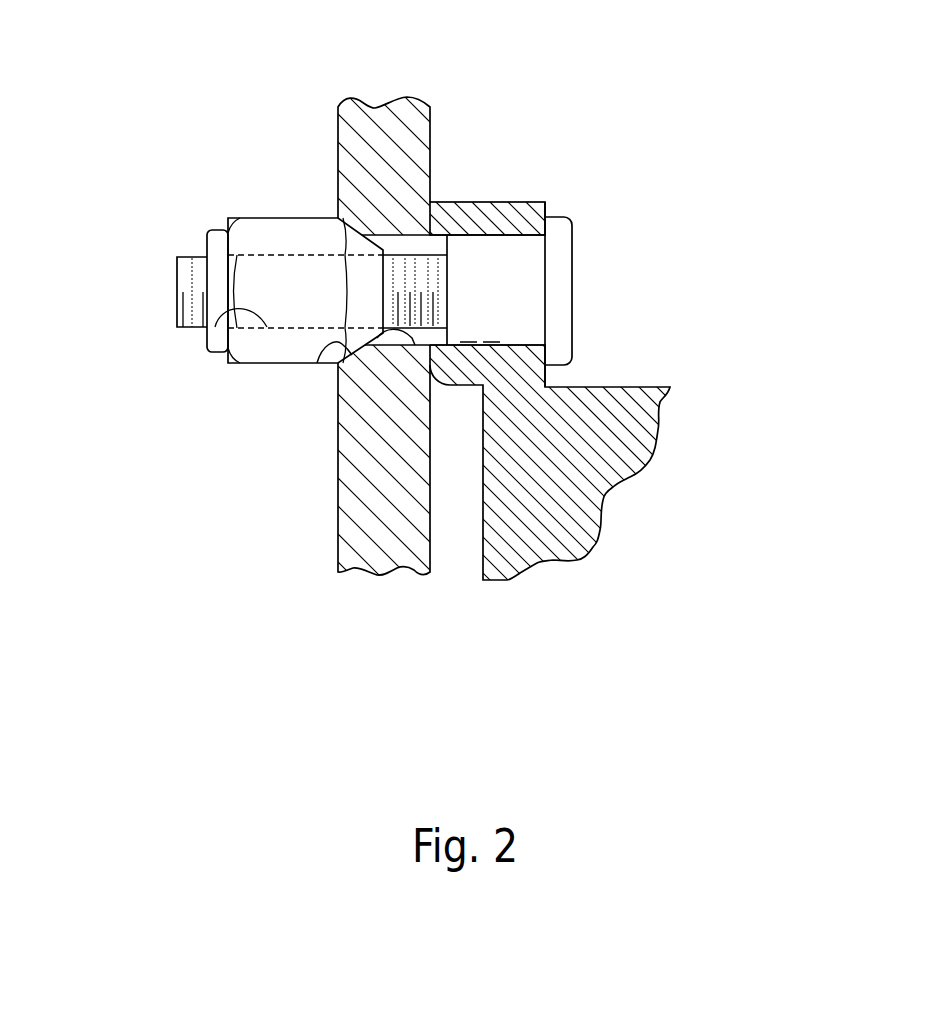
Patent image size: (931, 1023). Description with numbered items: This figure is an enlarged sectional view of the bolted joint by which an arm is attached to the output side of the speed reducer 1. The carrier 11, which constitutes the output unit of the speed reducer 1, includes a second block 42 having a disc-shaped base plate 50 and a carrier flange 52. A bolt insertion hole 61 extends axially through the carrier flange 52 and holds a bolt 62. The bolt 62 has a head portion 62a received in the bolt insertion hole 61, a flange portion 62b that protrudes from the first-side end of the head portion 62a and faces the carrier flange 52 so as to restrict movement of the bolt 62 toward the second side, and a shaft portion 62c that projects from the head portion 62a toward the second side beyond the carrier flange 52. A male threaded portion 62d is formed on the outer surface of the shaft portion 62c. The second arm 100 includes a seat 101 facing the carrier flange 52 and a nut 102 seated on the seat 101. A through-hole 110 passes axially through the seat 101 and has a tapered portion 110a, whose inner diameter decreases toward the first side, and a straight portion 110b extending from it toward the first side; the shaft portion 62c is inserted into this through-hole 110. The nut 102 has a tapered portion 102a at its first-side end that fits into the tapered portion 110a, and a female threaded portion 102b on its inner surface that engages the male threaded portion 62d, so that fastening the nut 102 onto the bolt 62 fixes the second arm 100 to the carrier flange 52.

The speed reducer 1 is at (705, 147).
The second arm 100 is at (389, 125).
The seat 101 is at (357, 147).
The nut 102 is at (248, 233).
The tapered portion 102a is at (357, 217).
The female threaded portion 102b is at (205, 325).
The through-hole 110 is at (207, 400).
The tapered portion 110a is at (330, 350).
The straight portion 110b is at (383, 347).
The carrier flange 52 is at (493, 202).
The bolt insertion hole 61 is at (500, 342).
The bolt 62 is at (582, 268).
The head portion 62a is at (503, 255).
The flange portion 62b is at (562, 217).
The shaft portion 62c is at (183, 278).
The male threaded portion 62d is at (200, 255).
The second block 42 is at (650, 378).
The carrier 11 is at (550, 462).
The base plate 50 is at (573, 480).